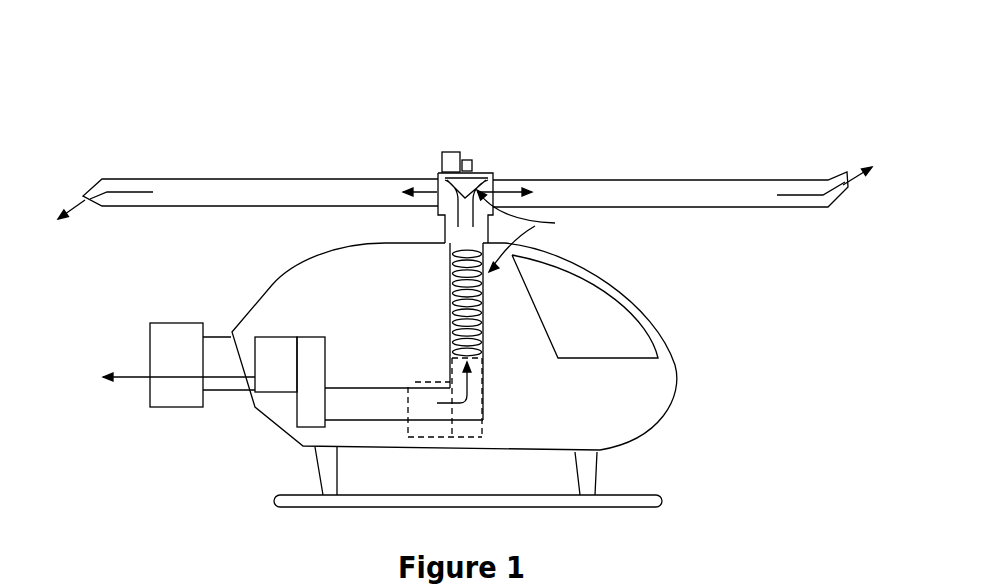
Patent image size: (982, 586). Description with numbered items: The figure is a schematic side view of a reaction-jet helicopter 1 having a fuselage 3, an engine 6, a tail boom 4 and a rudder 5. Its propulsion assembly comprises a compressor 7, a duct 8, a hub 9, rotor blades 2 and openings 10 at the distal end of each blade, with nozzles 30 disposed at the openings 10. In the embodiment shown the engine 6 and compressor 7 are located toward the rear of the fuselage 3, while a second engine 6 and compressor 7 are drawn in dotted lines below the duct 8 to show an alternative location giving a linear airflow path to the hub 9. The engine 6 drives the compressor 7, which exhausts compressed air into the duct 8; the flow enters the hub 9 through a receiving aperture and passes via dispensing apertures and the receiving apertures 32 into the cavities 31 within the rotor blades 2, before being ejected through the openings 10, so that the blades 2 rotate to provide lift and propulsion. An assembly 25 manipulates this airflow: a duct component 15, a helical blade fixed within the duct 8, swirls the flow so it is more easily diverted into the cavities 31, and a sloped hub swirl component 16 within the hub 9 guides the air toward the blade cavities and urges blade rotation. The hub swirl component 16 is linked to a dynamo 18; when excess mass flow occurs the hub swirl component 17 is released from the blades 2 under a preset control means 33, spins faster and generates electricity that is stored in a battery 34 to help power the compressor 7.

The reaction-jet helicopter 1 is at (183, 147).
The rotor blades 2 is at (333, 177).
The fuselage 3 is at (680, 372).
The tail boom 4 is at (217, 337).
The rudder 5 is at (152, 407).
The engine 6 is at (415, 380).
The compressor 7 is at (527, 415).
The duct 8 is at (483, 333).
The hub 9 is at (485, 170).
The openings 10 is at (98, 188).
The duct component 15 is at (450, 291).
The hub swirl component 16 is at (438, 177).
The hub swirl component 17 is at (424, 96).
The dynamo 18 is at (467, 162).
The assembly for manipulating airflow 25 is at (500, 230).
The nozzles 30 is at (83, 197).
The cavities 31 is at (252, 192).
The receiving apertures 32 is at (438, 195).
The control means 33 is at (448, 157).
The battery 34 is at (451, 162).